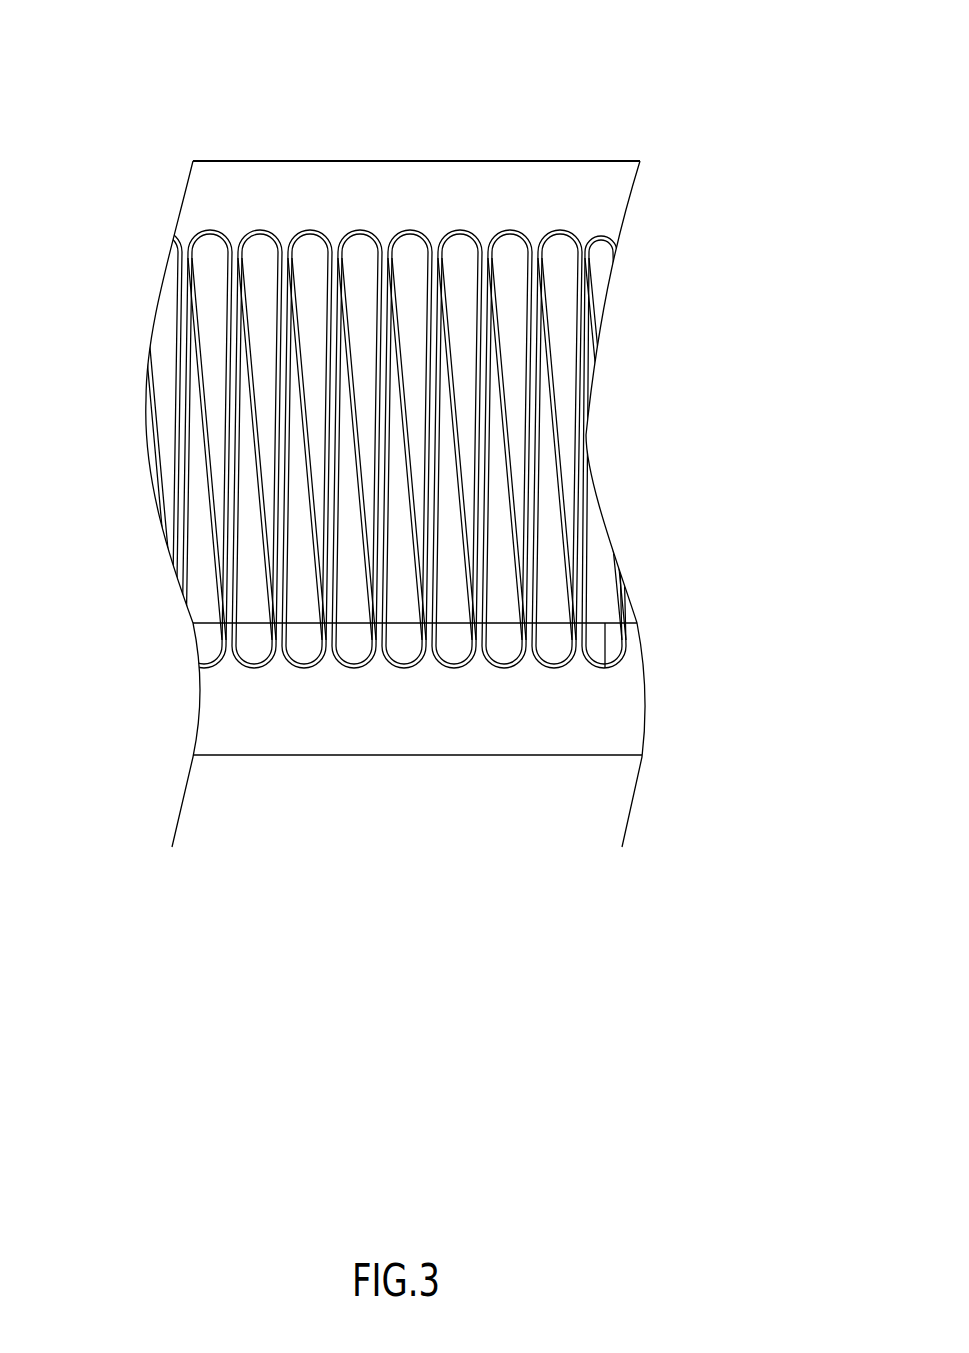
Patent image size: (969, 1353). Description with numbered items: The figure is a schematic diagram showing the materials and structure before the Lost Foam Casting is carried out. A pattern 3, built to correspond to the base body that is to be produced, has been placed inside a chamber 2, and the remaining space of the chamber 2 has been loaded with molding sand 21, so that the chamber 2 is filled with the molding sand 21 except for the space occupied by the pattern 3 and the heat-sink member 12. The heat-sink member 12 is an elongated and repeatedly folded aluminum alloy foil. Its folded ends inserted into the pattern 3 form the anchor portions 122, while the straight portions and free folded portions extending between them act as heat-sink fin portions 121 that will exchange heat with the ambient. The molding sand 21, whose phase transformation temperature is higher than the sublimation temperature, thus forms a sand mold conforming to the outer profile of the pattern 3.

The chamber 2 is at (595, 160).
The molding sand 21 is at (186, 154).
The pattern 3 is at (618, 730).
The heat-sink member 12 is at (489, 449).
The heat-sink fin portions 121 is at (580, 337).
The anchor portions 122 is at (606, 548).